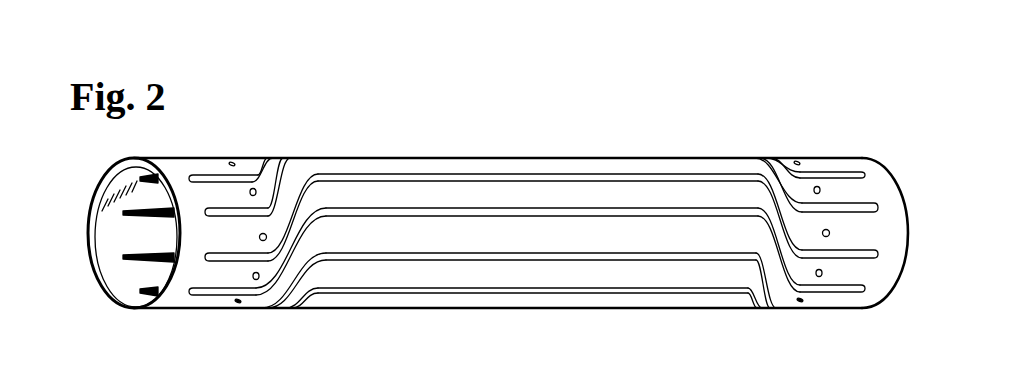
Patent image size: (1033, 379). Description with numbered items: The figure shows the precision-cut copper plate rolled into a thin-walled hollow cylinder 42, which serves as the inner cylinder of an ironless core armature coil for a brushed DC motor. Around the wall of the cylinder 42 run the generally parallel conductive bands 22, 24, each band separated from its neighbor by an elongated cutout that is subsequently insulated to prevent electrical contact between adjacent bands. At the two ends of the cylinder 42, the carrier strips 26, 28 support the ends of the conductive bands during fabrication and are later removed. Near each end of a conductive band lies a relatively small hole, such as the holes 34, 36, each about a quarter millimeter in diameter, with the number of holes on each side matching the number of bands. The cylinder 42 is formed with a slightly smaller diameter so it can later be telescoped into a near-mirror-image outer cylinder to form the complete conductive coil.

The cylinder 42 is at (625, 106).
The conductive band 22 is at (452, 189).
The conductive band 24 is at (362, 161).
The carrier strip 26 is at (170, 302).
The carrier strip 28 is at (871, 300).
The hole 34 is at (238, 302).
The hole 36 is at (800, 301).